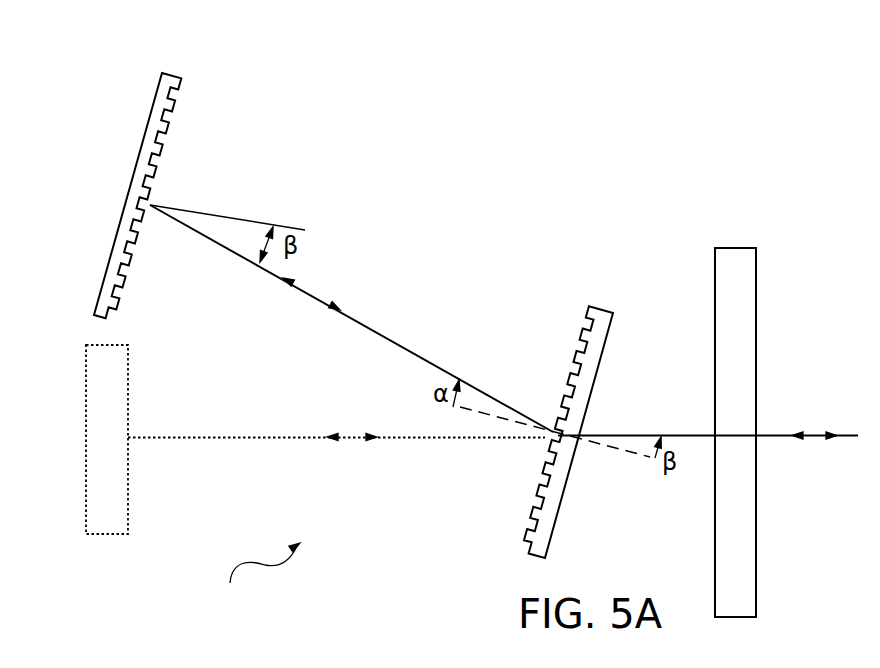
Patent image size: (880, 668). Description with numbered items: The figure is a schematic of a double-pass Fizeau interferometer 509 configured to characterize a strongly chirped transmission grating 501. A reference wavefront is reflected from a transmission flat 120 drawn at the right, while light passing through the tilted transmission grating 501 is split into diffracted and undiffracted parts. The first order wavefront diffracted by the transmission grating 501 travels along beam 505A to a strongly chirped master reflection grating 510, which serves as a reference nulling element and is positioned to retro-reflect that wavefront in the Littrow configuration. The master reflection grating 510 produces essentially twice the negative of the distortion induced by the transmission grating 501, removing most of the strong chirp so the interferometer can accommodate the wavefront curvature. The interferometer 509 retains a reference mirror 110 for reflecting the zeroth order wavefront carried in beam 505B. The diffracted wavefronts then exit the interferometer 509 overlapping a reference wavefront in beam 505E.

The master reflection grating 510 is at (160, 110).
The beam 505A is at (373, 328).
The transmission grating 501 is at (600, 308).
The transmission flat 120 is at (748, 270).
The beam 505E is at (815, 430).
The beam 505B is at (287, 438).
The reference mirror 110 is at (103, 518).
The Fizeau interferometer 509 is at (254, 578).